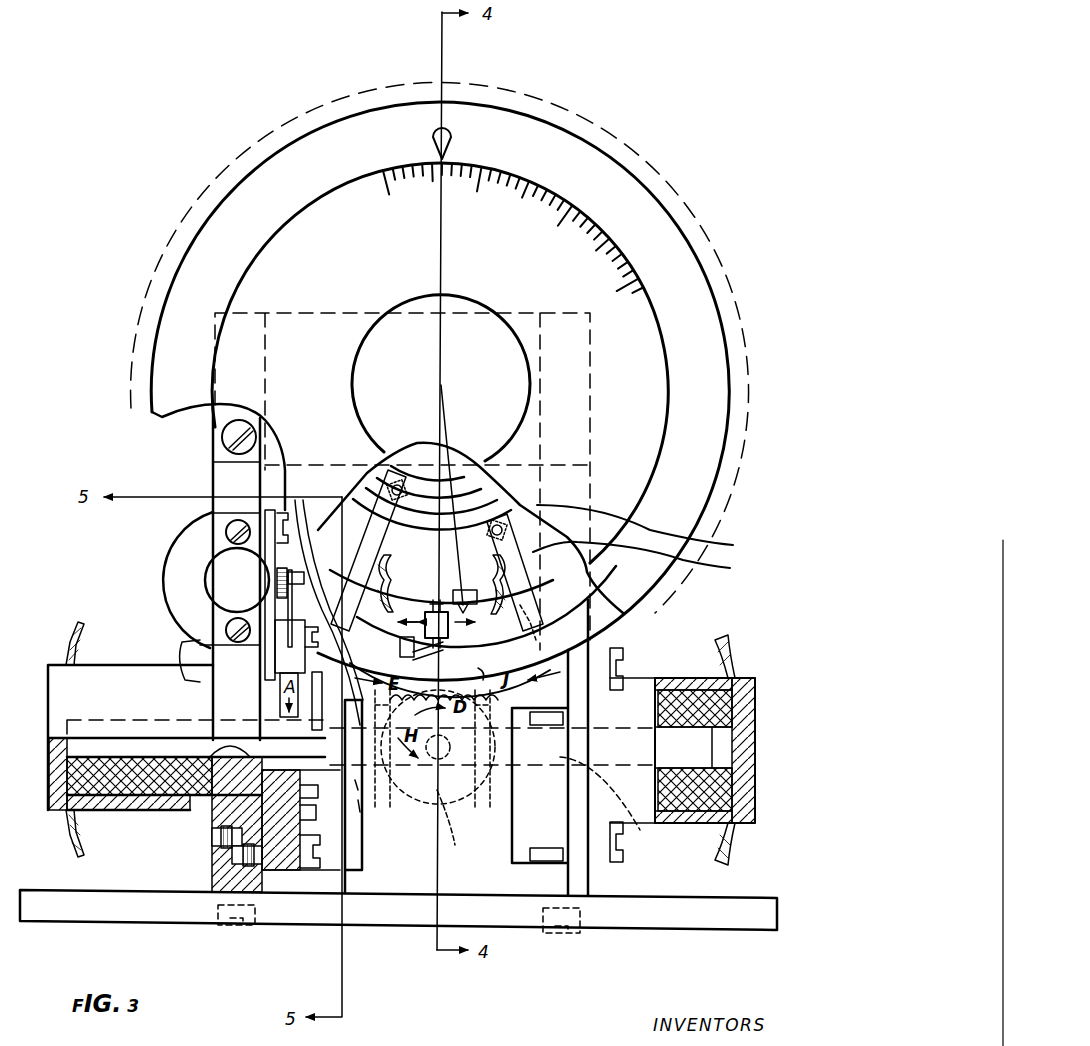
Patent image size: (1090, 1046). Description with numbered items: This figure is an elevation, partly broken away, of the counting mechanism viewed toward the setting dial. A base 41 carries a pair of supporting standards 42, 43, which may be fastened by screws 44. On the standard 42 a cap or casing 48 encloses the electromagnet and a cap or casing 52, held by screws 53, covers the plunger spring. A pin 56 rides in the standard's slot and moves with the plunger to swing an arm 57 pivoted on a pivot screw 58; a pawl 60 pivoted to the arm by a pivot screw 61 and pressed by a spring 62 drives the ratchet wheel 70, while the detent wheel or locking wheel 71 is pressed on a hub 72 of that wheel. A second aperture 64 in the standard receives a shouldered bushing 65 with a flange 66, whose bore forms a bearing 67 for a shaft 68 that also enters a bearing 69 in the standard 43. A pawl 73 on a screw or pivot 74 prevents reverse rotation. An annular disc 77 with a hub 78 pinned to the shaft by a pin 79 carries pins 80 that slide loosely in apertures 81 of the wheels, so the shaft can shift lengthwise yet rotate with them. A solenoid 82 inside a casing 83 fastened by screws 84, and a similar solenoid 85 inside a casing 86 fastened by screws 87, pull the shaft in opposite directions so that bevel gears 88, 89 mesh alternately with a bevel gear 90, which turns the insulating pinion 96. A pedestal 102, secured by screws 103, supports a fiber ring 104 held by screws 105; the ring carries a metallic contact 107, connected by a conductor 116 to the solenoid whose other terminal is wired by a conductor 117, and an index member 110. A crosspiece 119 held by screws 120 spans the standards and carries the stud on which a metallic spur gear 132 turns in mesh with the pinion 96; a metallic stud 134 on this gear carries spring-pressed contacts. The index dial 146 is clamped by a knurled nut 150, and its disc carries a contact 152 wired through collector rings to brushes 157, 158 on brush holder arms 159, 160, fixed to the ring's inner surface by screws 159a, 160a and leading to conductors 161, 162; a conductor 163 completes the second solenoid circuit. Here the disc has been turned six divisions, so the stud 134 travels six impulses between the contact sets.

The spur gear 132 is at (410, 52).
The index member 110 is at (450, 128).
The index dial 146 is at (513, 176).
The knurled nut 150 is at (362, 365).
The brush 157 is at (378, 463).
The brush 158 is at (654, 530).
The brush holder arm 160 is at (651, 560).
The brush holder arm 159 is at (395, 478).
The screw 160a is at (537, 597).
The screw 159a is at (384, 582).
The conductor 161 is at (389, 597).
The metallic stud 134 is at (455, 638).
The contact 152 is at (455, 590).
The metallic contact 107 is at (408, 657).
The spur gear or pinion 96 is at (469, 664).
The conductor 162 is at (536, 622).
The crosspiece 119 is at (263, 467).
The screw 120 is at (222, 437).
The supporting standard 42 is at (222, 503).
The screw 53 is at (226, 625).
The cap or casing 52 is at (213, 580).
The cap or casing 48 is at (192, 578).
The arm 57 is at (270, 508).
The spring 62 is at (288, 568).
The pin 56 is at (298, 577).
The pivot screw 58 is at (300, 500).
The pawl 60 is at (305, 665).
The pivot screw 61 is at (335, 637).
The flange 66 is at (340, 800).
The conductor 117 is at (70, 628).
The conductor 116 is at (65, 855).
The solenoid 82 is at (67, 788).
The casing 83 is at (62, 780).
The bearing 67 is at (222, 760).
The hub 72 is at (225, 830).
The screw 84 is at (215, 838).
The shouldered bushing 65 is at (220, 800).
The aperture 64 is at (223, 792).
The pin 80 is at (308, 793).
The aperture 81 is at (312, 815).
The annular disc 77 is at (312, 840).
The hub 78 is at (355, 795).
The pin 79 is at (360, 815).
The base 41 is at (150, 920).
The screw 44 is at (226, 930).
The detent wheel or locking wheel 71 is at (280, 880).
The ratchet wheel 70 is at (295, 880).
The pawl 73 is at (318, 870).
The screw or pivot 74 is at (330, 865).
The shaft 68 is at (700, 740).
The bevel gear 88 is at (377, 795).
The bevel gear 89 is at (490, 815).
The bevel gear 90 is at (480, 835).
The pedestal 102 is at (505, 830).
The screw 105 is at (570, 725).
The screw 103 is at (585, 858).
The screw 87 is at (625, 662).
The aperture or bearing 69 is at (635, 825).
The ring 104 is at (595, 637).
The supporting standard 43 is at (620, 636).
The conductor 163 is at (730, 640).
The solenoid 85 is at (690, 700).
The casing 86 is at (740, 676).